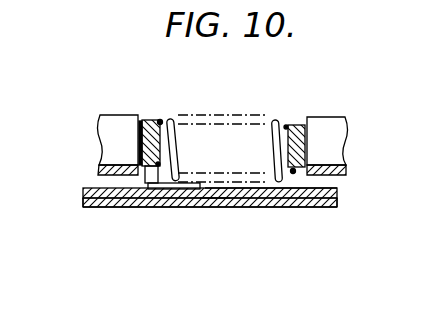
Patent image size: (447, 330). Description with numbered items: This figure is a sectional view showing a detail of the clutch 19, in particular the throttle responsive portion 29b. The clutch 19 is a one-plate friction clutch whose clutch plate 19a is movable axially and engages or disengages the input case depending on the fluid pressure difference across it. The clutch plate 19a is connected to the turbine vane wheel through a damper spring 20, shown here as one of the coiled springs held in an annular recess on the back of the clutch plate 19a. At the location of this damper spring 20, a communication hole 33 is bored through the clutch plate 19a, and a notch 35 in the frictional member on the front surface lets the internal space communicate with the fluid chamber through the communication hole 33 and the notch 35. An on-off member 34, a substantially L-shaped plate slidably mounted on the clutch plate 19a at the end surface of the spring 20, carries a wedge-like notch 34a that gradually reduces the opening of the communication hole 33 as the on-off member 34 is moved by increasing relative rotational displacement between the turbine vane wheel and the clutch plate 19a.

The clutch 19 is at (133, 210).
The clutch plate 19a is at (83, 209).
The damper spring 20 is at (277, 118).
The throttle responsive portion 29b is at (186, 121).
The communication hole 33 is at (222, 207).
The on-off member 34 is at (165, 205).
The wedge-like notch 34a is at (187, 185).
The notch 35 is at (205, 203).